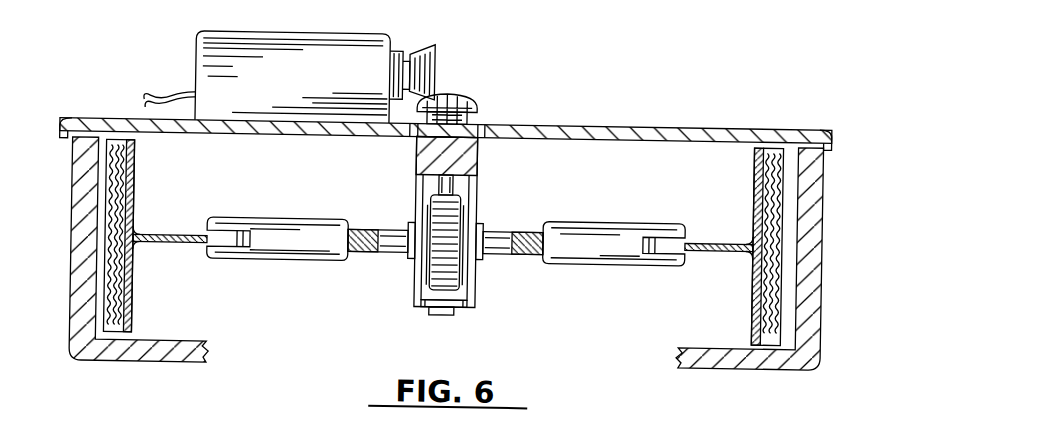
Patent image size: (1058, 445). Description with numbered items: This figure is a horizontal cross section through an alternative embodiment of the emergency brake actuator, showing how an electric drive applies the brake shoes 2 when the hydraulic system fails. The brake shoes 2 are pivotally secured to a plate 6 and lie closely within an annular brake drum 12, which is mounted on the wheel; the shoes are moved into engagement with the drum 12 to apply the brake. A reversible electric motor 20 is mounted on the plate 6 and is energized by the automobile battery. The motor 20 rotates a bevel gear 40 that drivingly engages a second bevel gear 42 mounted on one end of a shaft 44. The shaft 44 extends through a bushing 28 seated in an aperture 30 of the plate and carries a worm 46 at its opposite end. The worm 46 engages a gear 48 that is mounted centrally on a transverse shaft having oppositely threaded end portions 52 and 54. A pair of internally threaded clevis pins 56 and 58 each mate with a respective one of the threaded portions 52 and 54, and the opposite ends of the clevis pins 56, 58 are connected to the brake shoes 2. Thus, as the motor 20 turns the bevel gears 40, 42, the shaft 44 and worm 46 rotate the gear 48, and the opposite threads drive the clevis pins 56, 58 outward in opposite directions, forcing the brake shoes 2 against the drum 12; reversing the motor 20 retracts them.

The brake shoes 2 is at (133, 295).
The plate 6 is at (674, 124).
The brake drum 12 is at (70, 325).
The reversible electric motor 20 is at (273, 36).
The bushing 28 is at (468, 118).
The aperture 30 is at (411, 133).
The bevel gear 40 is at (428, 53).
The second bevel gear 42 is at (478, 100).
The shaft 44 is at (477, 188).
The worm 46 is at (478, 286).
The gear 48 is at (468, 206).
The threaded end portion 52 is at (380, 255).
The threaded end portion 54 is at (532, 255).
The clevis pin 56 is at (265, 221).
The clevis pin 58 is at (622, 220).